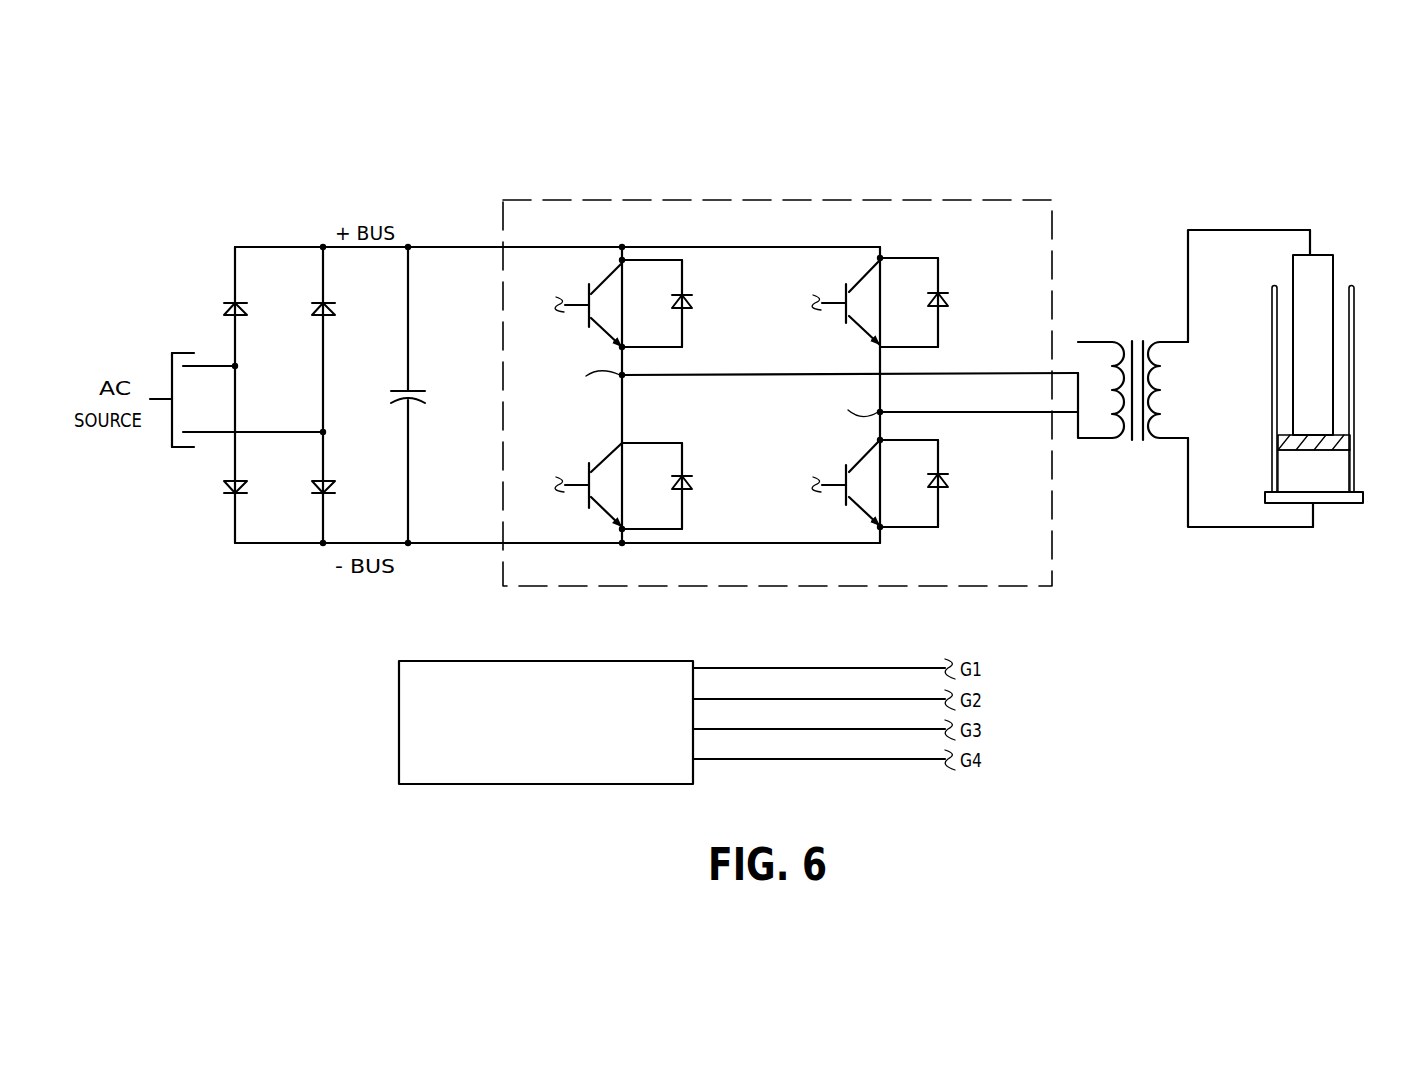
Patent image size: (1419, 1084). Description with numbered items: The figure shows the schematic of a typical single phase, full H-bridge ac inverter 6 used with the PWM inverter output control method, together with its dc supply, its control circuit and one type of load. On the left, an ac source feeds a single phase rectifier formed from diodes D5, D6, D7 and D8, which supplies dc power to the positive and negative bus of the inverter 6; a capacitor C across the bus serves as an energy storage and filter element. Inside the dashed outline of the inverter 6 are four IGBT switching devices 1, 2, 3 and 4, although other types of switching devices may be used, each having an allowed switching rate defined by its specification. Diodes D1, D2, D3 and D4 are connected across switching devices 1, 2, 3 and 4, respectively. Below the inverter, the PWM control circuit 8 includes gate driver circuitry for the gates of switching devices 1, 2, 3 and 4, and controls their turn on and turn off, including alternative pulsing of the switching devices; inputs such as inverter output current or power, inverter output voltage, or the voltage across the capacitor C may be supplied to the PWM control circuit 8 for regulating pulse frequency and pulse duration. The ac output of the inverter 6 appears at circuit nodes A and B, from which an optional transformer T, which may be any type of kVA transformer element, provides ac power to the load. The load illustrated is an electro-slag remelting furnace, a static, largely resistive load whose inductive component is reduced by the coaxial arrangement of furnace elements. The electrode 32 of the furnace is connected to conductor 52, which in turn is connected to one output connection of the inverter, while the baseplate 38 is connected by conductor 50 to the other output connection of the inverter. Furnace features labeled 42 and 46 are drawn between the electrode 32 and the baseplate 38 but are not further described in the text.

The switching device 1 is at (598, 282).
The switching device 2 is at (600, 457).
The switching device 3 is at (860, 279).
The switching device 4 is at (865, 457).
The inverter 6 is at (1046, 173).
The PWM control circuit 8 is at (420, 720).
The electrode 32 is at (1313, 345).
The baseplate 38 is at (1350, 498).
The piston / seal 42 is at (1348, 444).
The chamber 46 is at (1314, 471).
The conductor 50 is at (1314, 518).
The conductor 52 is at (1311, 246).
The capacitor C is at (417, 398).
The transformer T is at (1133, 376).
The diode D1 is at (698, 303).
The diode D2 is at (698, 485).
The diode D3 is at (954, 301).
The diode D4 is at (954, 483).
The diode D5 is at (251, 311).
The diode D6 is at (251, 488).
The diode D7 is at (339, 311).
The diode D8 is at (339, 488).